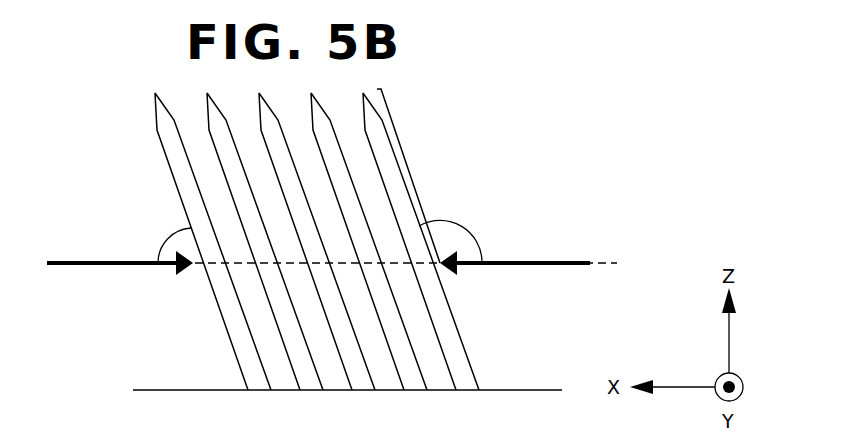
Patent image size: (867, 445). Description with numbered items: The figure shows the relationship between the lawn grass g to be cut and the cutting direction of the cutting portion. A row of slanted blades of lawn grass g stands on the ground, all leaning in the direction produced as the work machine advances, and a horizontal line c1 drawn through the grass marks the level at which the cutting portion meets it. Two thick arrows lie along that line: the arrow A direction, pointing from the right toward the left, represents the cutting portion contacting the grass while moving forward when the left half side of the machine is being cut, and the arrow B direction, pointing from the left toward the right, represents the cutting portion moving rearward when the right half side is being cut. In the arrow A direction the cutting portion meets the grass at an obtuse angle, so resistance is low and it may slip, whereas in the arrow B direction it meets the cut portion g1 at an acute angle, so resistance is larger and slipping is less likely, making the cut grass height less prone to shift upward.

The lawn grass g is at (136, 129).
The cut portion g1 is at (414, 172).
The center line c1 is at (240, 264).
The arrow A direction A is at (515, 248).
The arrow B direction B is at (120, 247).